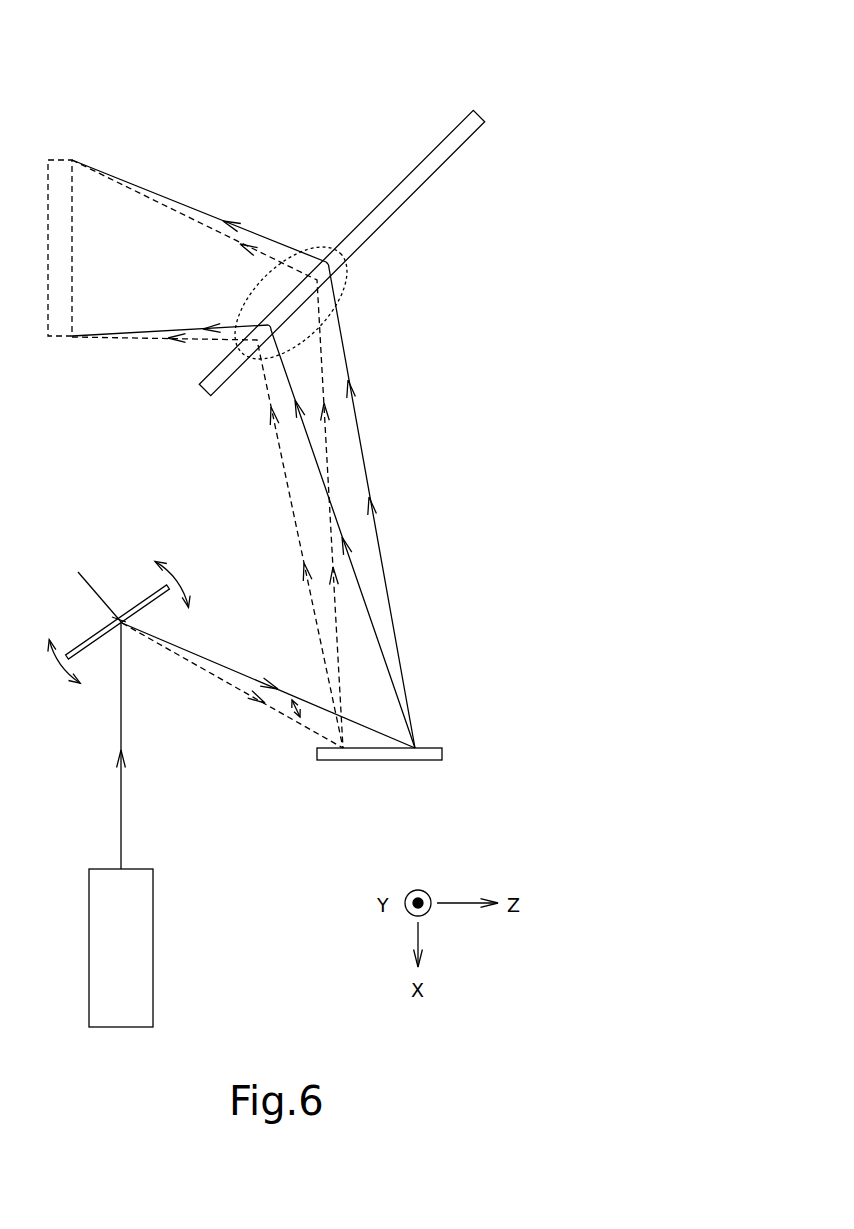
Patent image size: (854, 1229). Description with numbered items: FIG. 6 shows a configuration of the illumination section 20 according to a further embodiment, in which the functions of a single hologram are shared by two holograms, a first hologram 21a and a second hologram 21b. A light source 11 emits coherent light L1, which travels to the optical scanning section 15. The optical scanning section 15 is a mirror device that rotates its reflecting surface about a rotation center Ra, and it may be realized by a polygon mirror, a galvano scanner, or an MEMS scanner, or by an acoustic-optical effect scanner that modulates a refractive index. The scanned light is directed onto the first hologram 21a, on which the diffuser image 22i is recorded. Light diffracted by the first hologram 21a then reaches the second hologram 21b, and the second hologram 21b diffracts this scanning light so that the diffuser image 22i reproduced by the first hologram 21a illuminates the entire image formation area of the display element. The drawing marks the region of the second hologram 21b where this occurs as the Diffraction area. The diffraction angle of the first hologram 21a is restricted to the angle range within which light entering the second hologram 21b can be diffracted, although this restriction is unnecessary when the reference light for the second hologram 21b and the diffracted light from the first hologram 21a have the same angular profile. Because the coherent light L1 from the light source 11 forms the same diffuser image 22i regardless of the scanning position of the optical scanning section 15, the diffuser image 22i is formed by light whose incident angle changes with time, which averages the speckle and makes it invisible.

The illumination section 20 is at (235, 88).
The second hologram 21b is at (483, 110).
The diffuser image 22i is at (62, 338).
The optical scanning section 15 is at (87, 640).
The rotation center Ra is at (90, 587).
The coherent light L1 is at (120, 790).
The light source 11 is at (148, 945).
The first hologram 21a is at (442, 752).
The diffraction area Diffraction area is at (343, 278).